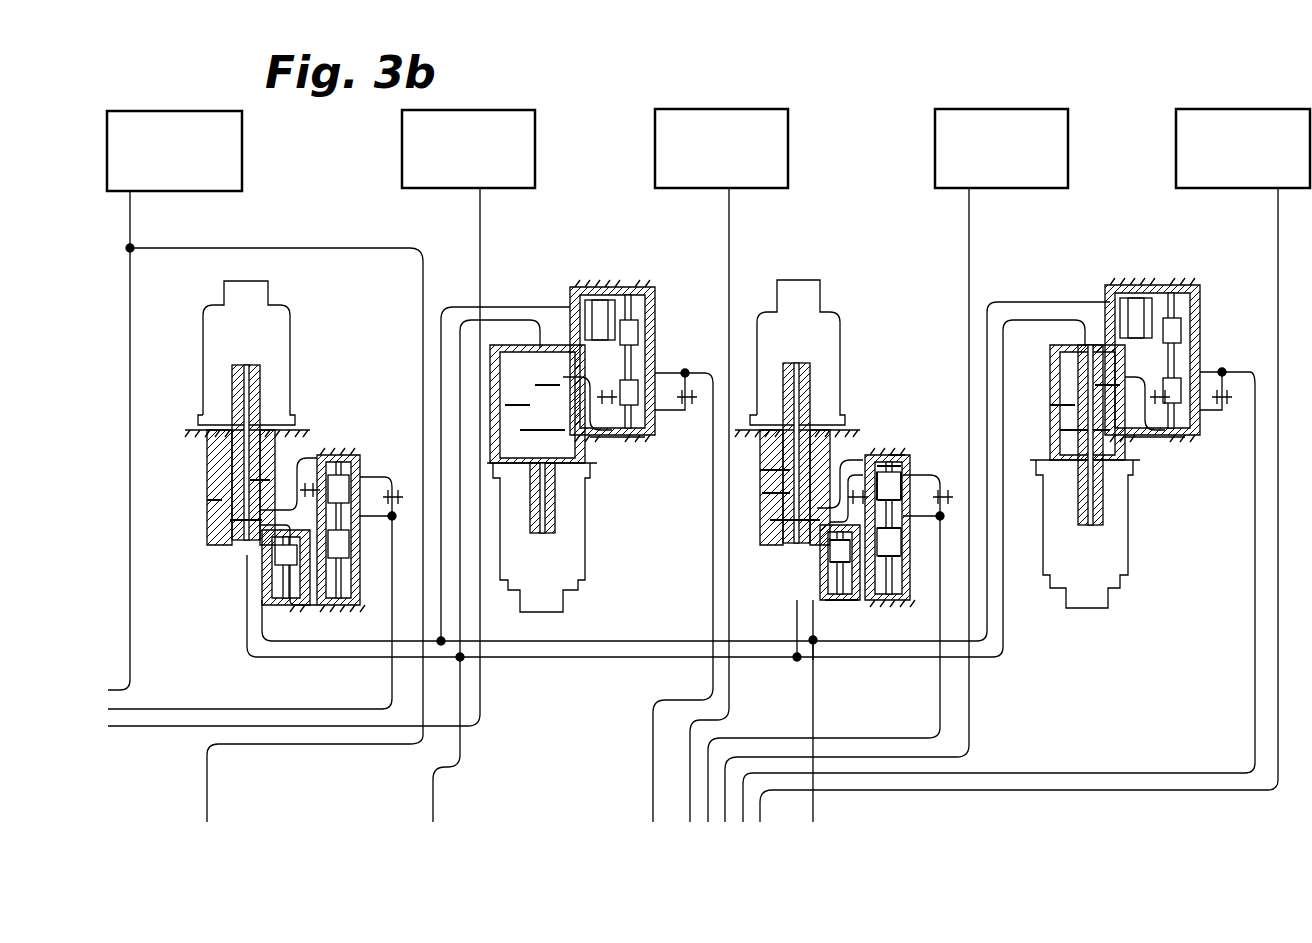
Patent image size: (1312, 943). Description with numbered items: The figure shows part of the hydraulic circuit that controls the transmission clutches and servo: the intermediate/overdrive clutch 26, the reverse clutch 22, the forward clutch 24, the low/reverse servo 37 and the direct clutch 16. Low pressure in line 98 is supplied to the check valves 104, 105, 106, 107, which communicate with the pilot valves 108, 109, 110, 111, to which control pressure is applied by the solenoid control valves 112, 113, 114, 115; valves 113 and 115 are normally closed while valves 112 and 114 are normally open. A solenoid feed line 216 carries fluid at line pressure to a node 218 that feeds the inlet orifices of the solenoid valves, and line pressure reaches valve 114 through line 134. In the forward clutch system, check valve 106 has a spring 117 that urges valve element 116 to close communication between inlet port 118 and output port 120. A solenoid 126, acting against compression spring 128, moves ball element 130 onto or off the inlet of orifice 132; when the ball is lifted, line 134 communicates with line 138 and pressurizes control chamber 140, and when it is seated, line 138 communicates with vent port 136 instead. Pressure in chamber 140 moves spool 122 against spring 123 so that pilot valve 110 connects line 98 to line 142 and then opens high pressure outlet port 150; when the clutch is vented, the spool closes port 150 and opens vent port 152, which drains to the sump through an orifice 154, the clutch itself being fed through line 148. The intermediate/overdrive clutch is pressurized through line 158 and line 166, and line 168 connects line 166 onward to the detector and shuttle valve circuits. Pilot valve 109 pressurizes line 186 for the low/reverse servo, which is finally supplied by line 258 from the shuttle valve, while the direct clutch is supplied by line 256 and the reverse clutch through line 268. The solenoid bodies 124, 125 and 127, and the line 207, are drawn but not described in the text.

The intermediate/overdrive clutch 26 is at (150, 111).
The reverse clutch 22 is at (535, 118).
The forward clutch 24 is at (735, 109).
The low/reverse servo 37 is at (1009, 109).
The direct clutch 16 is at (1235, 109).
The line 166 is at (130, 300).
The line 168 is at (292, 248).
The line 158 is at (164, 709).
The line 268 is at (478, 722).
The solenoid feed line 216 is at (500, 320).
The node 218 is at (465, 662).
The line 134 is at (555, 657).
The line 148 is at (729, 218).
The line 186 is at (704, 556).
The hydraulic line 142 is at (940, 684).
The line 258 is at (975, 707).
The direct clutch solenoid line 207 is at (1168, 773).
The line 256 is at (1192, 792).
The line 98 is at (815, 715).
The inlet port 118 is at (818, 657).
The solenoid 124 is at (288, 325).
The solenoid control valve 112 is at (203, 543).
The pilot valve 108 is at (338, 431).
The check valve 104 is at (281, 619).
The solenoid control valve 113 is at (509, 377).
The solenoid 125 is at (562, 575).
The check valve 105 is at (601, 277).
The pilot valve 109 is at (631, 469).
The solenoid 126 is at (818, 325).
The compression spring 128 is at (815, 410).
The ball element 130 is at (788, 520).
The orifice 132 is at (790, 540).
The solenoid control valve 114 is at (747, 473).
The vent port 136 is at (750, 496).
The pilot valve 110 is at (885, 500).
The hydraulic line 138 is at (862, 460).
The orifice 154 is at (881, 459).
The control chamber 140 is at (908, 462).
The high pressure outlet port 150 is at (908, 465).
The vent port 152 is at (902, 495).
The spool 122 is at (900, 575).
The spring 123 is at (900, 575).
The check valve 106 is at (848, 619).
The output port 120 is at (860, 598).
The spring 117 is at (828, 548).
The valve element 116 is at (826, 565).
The solenoid control valve 115 is at (1048, 378).
The solenoid 127 is at (1125, 530).
The check valve 107 is at (1132, 275).
The pilot valve 111 is at (1179, 459).